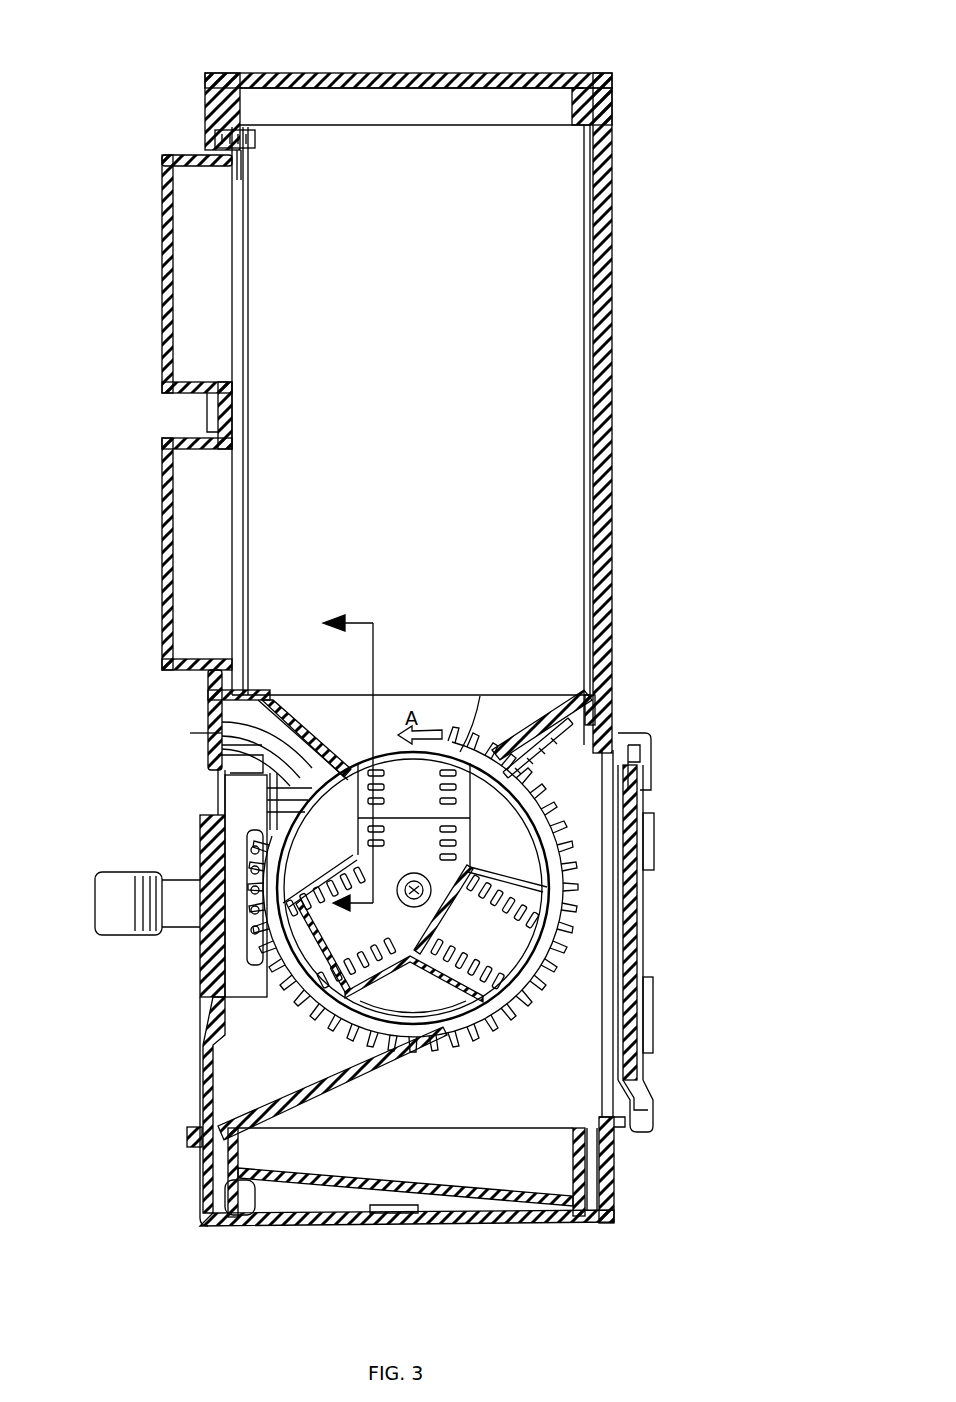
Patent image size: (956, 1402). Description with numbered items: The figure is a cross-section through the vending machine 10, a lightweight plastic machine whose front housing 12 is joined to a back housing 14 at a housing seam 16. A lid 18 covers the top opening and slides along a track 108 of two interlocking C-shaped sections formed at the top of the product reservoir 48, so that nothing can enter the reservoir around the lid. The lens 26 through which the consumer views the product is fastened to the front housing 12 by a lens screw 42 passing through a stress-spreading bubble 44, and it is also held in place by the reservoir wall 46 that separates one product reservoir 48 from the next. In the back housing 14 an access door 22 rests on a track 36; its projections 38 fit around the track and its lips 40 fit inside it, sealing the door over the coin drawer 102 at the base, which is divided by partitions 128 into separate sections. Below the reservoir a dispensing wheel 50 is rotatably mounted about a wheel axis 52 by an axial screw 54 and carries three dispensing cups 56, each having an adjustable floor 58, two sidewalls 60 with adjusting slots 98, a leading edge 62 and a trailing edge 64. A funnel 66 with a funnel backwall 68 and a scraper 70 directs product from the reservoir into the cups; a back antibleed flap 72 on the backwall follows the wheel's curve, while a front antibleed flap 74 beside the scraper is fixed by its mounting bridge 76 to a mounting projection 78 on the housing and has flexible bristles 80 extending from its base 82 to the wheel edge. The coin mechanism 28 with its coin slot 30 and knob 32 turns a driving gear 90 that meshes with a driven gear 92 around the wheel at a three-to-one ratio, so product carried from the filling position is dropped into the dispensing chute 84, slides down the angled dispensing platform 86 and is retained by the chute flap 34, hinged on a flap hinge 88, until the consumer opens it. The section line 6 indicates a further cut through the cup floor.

The vending machine 10 is at (558, 63).
The front housing 12 is at (212, 415).
The back housing 14 is at (614, 398).
The housing seam 16 is at (382, 1232).
The lid 18 is at (372, 74).
The access door 22 is at (658, 900).
The lens 26 is at (160, 292).
The coin mechanism 28 is at (200, 830).
The coin slot 30 is at (225, 782).
The knob 32 is at (100, 902).
The chute flap 34 is at (200, 1110).
The track 36 is at (651, 745).
The projections 38 is at (655, 1113).
The lips 40 is at (650, 790).
The lens screw 42 is at (262, 152).
The bubble 44 is at (248, 165).
The reservoir wall 46 is at (520, 472).
The product reservoir 48 is at (432, 377).
The dispensing wheel 50 is at (480, 1040).
The wheel axis 52 is at (413, 899).
The axial screw 54 is at (413, 873).
The dispensing cups 56 is at (600, 940).
The adjustable floor 58 is at (548, 975).
The sidewalls 60 is at (423, 803).
The leading edge 62 is at (350, 742).
The trailing edge 64 is at (470, 722).
The funnel 66 is at (440, 700).
The funnel backwall 68 is at (592, 708).
The scraper 70 is at (300, 720).
The back antibleed flap 72 is at (590, 735).
The front antibleed flap 74 is at (222, 718).
The mounting bridge 76 is at (222, 746).
The mounting projection 78 is at (222, 766).
The bristles 80 is at (222, 735).
The base 82 is at (264, 800).
The dispensing chute 84 is at (228, 1073).
The dispensing platform 86 is at (338, 1085).
The flap hinge 88 is at (205, 1031).
The driving gear 90 is at (250, 872).
The driven gear 92 is at (302, 1012).
The adjusting slots 98 is at (330, 906).
The coin drawer 102 is at (614, 1180).
The track 108 is at (600, 110).
The partitions 128 is at (405, 1150).
The section line 6- 6 is at (359, 765).